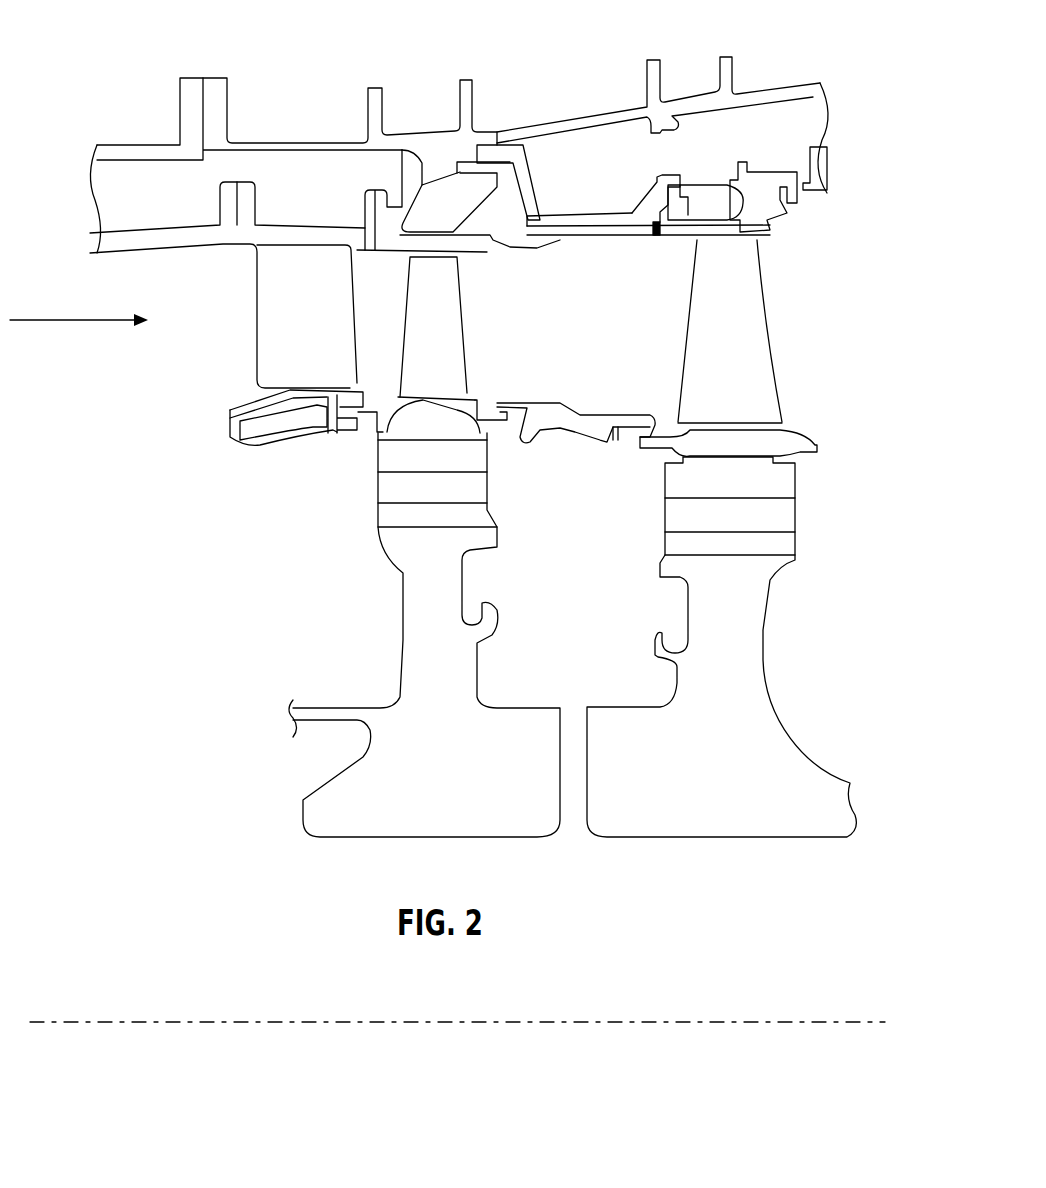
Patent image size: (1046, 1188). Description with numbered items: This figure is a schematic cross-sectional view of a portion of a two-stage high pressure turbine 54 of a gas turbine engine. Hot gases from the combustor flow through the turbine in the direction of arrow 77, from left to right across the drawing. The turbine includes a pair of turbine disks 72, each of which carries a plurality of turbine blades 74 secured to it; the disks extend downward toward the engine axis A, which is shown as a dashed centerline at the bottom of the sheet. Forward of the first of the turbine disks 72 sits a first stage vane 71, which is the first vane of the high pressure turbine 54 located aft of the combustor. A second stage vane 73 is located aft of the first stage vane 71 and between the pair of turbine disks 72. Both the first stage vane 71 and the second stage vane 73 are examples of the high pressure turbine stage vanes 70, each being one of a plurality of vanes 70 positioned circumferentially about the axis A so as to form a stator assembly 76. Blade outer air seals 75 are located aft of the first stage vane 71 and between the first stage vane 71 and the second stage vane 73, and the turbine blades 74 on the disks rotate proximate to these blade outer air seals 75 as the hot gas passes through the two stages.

The high pressure turbine 54 is at (775, 28).
The high pressure turbine stage vanes 70 is at (248, 383).
The first stage vane 71 is at (273, 290).
The turbine disks 72 is at (400, 698).
The second stage vane 73 is at (607, 338).
The turbine blades 74 is at (445, 377).
The blade outer air seals 75 is at (395, 245).
The stator assembly 76 is at (656, 165).
The arrow 77 is at (80, 323).
The axis A is at (753, 1023).